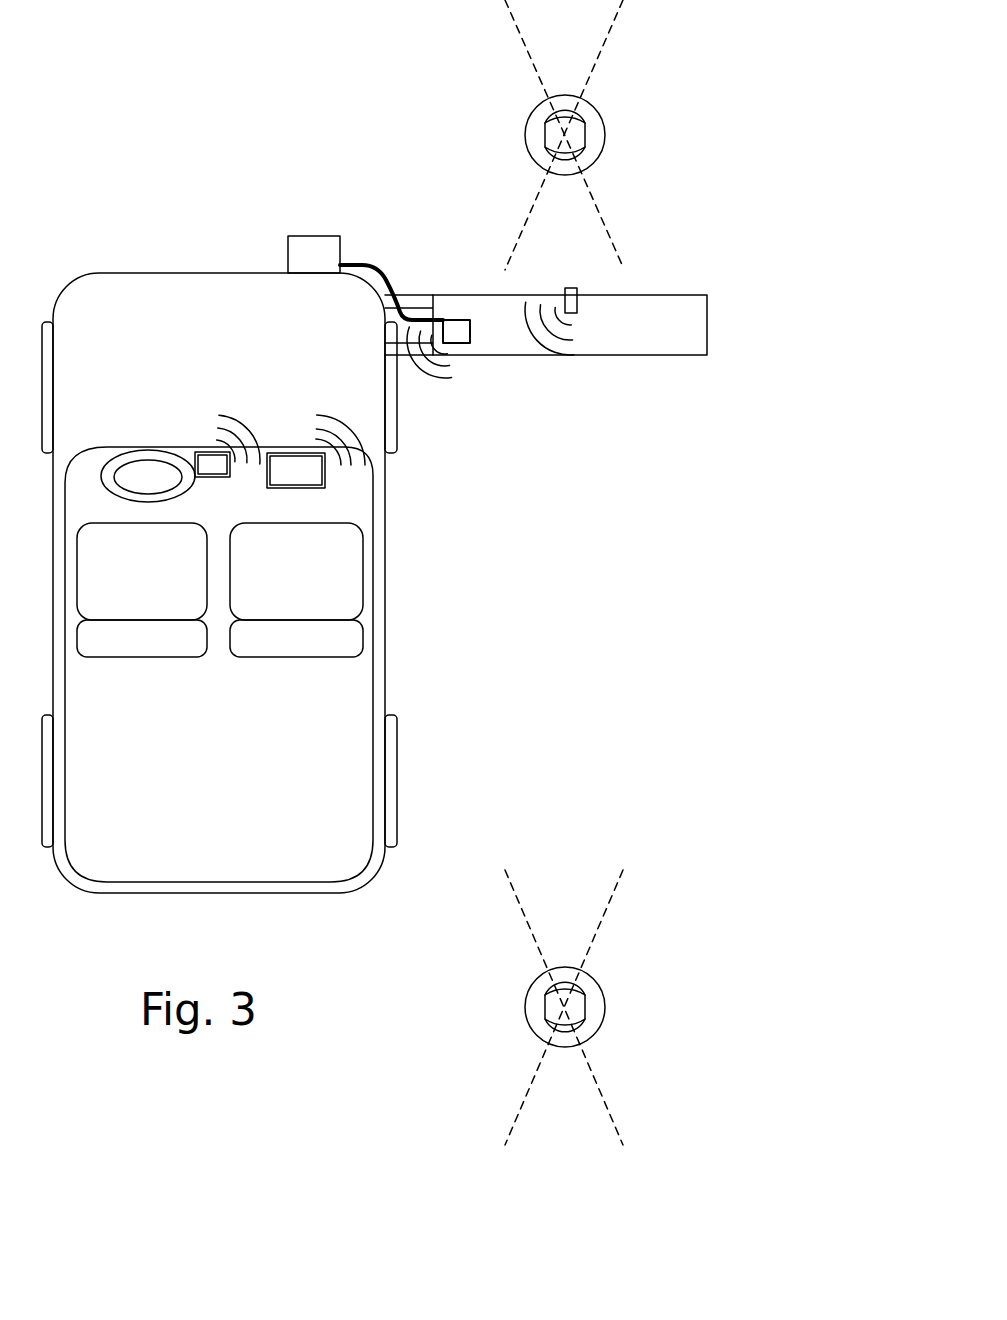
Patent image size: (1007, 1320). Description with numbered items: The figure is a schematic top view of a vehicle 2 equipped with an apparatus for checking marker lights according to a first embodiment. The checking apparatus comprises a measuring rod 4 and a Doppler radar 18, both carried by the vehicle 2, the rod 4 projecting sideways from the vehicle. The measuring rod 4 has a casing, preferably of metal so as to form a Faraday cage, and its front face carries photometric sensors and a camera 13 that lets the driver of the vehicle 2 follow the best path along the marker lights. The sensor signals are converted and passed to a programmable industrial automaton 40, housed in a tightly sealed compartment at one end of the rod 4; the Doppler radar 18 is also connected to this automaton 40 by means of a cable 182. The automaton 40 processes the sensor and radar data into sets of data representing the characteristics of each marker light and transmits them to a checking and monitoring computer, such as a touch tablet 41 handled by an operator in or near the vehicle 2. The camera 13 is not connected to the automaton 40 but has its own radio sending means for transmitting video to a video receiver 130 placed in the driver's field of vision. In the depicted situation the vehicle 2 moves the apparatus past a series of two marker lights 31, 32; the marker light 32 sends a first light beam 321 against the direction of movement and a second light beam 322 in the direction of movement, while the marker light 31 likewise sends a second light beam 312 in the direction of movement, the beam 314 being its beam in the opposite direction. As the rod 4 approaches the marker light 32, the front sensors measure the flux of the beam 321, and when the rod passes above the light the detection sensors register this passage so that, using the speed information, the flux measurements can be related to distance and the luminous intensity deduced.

The vehicle 2 is at (152, 303).
The video receiver 130 is at (210, 463).
The Doppler radar 18 is at (303, 248).
The cable 182 is at (378, 267).
The measuring rod 4 is at (613, 343).
The programmable industrial automaton 40 is at (455, 337).
The touch tablet 41 is at (310, 480).
The camera 13 is at (578, 302).
The marker light 31 is at (590, 1003).
The second light beam 312 is at (575, 913).
The light beam boundary of lower light source 314 is at (575, 1097).
The marker light 32 is at (592, 133).
The first light beam 321 is at (573, 217).
The second light beam 322 is at (577, 50).